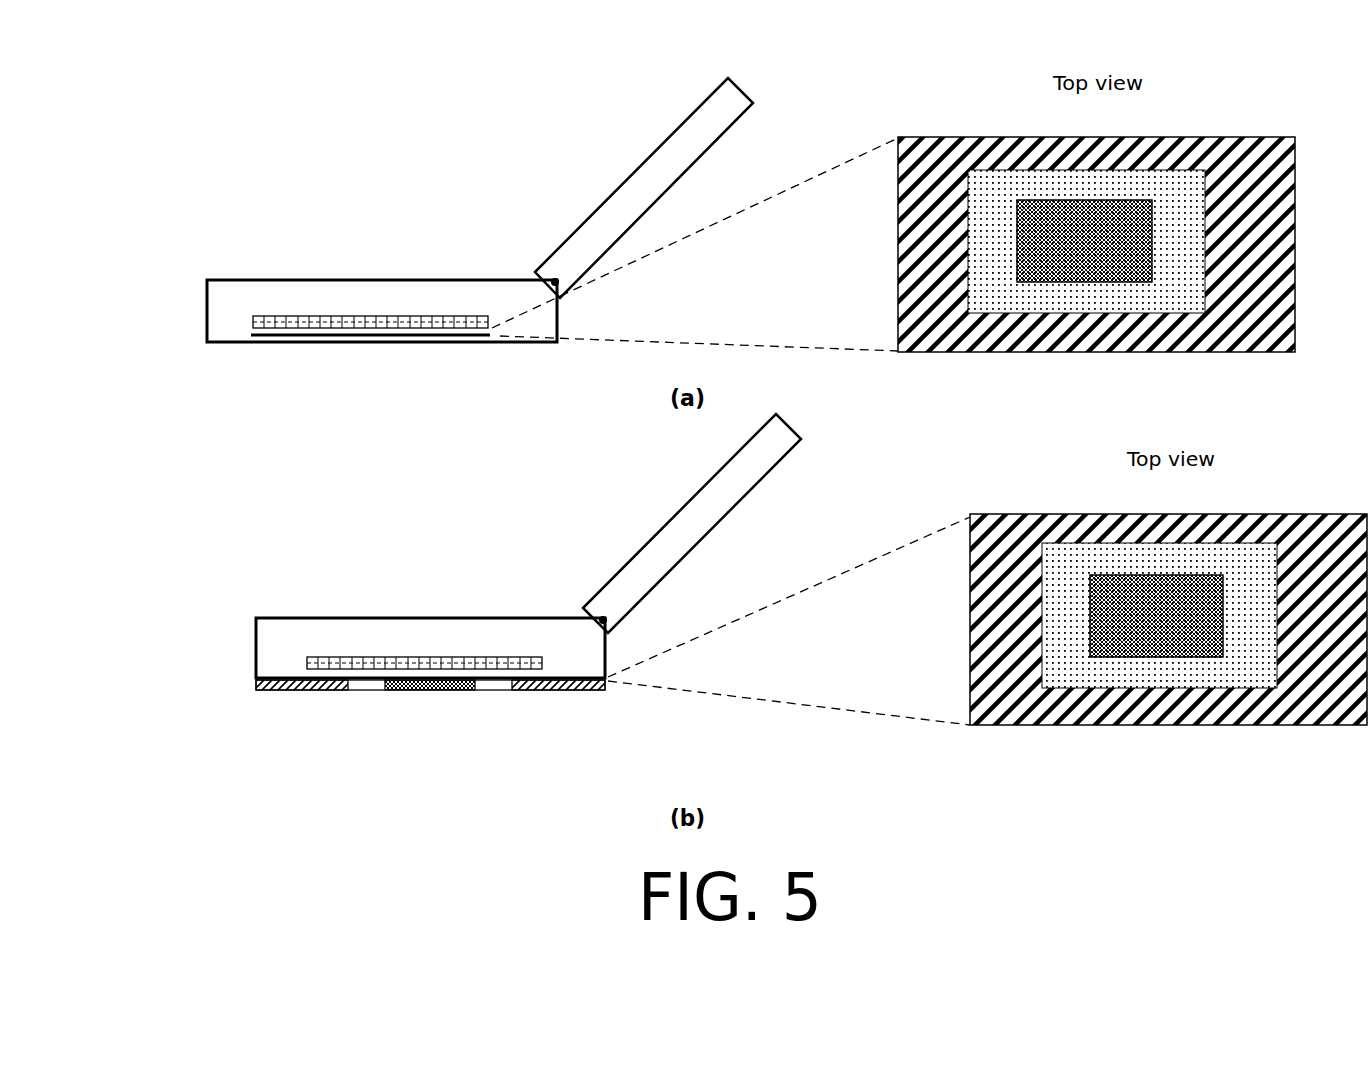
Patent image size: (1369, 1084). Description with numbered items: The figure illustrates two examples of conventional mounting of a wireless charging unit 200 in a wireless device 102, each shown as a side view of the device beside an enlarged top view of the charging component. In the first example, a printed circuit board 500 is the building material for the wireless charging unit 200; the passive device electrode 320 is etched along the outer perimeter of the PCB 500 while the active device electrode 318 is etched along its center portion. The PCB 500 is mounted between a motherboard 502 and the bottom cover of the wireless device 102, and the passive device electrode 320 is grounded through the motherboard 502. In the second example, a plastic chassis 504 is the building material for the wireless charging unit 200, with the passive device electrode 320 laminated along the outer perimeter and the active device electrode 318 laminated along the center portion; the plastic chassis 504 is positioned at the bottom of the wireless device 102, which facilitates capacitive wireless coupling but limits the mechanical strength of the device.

The wireless device 102 is at (222, 276).
The motherboard 502 is at (357, 311).
The wireless charging unit 200 is at (234, 681).
The active device electrode 318 is at (1049, 196).
The passive device electrode 320 is at (923, 224).
The printed circuit board 500 is at (1199, 357).
The plastic chassis 504 is at (1146, 730).